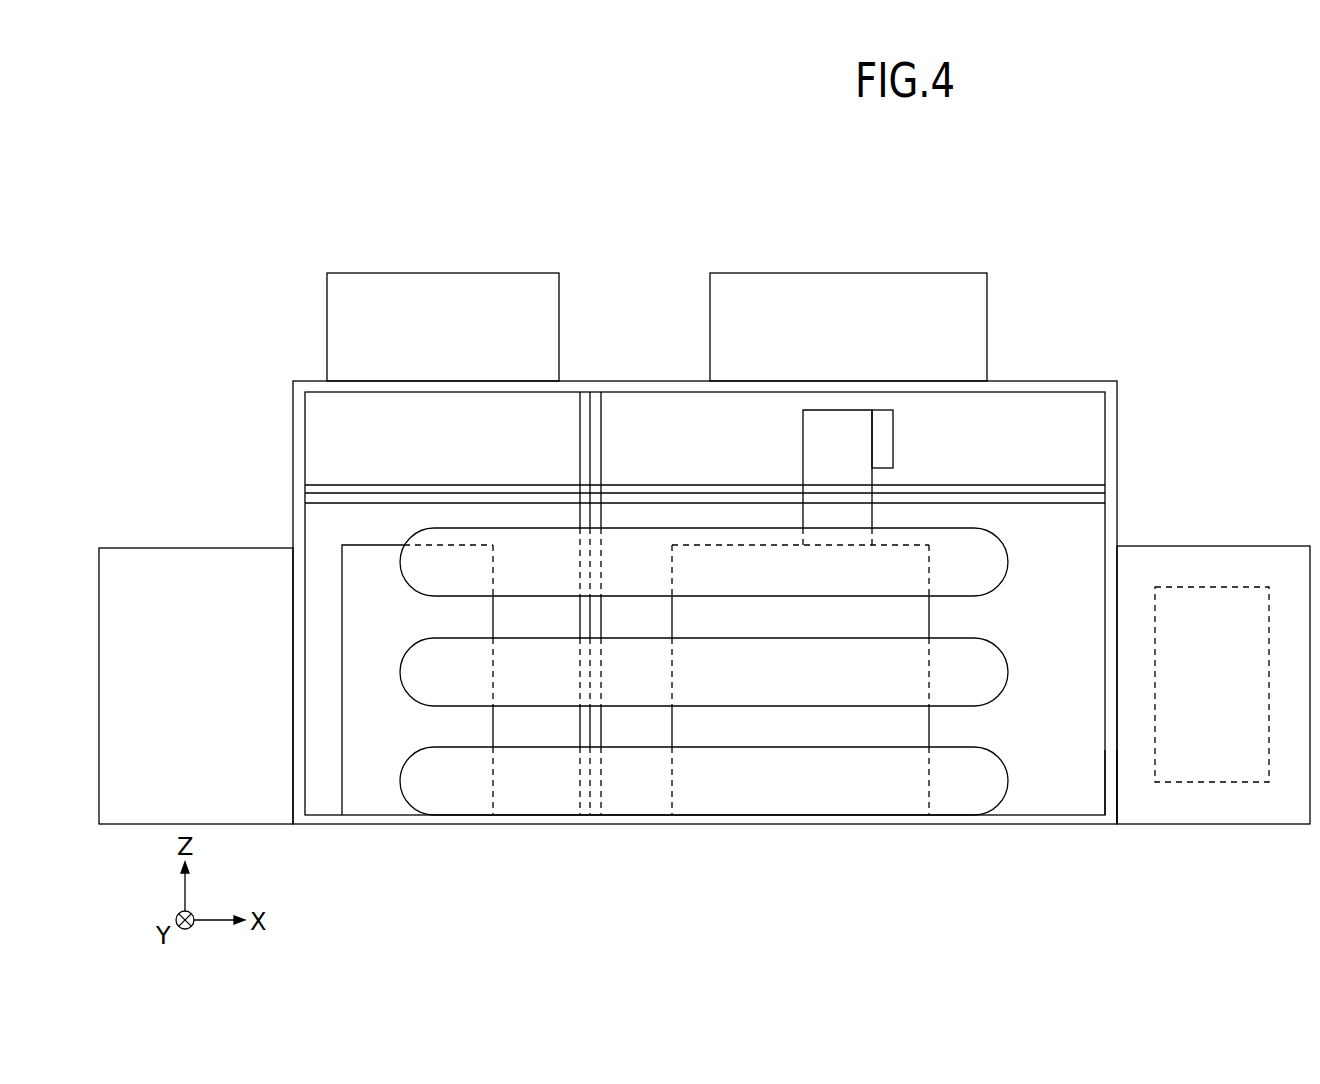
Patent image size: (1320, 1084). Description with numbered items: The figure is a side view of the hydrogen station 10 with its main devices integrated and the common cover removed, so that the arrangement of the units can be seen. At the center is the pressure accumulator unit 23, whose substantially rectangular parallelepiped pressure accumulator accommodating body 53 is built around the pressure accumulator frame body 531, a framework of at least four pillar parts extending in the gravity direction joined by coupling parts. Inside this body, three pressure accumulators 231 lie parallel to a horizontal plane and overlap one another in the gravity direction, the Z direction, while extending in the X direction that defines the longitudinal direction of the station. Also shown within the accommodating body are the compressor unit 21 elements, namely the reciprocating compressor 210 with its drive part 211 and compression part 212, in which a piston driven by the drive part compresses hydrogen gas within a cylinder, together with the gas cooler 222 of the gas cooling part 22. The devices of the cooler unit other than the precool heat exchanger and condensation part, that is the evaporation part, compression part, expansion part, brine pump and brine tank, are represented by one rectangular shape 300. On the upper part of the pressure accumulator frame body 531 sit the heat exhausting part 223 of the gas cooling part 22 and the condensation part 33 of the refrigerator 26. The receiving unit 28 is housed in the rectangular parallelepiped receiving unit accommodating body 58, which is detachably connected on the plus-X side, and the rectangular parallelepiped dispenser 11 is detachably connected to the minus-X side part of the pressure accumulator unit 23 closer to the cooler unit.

The hydrogen station 10 is at (312, 175).
The dispenser 11 is at (152, 547).
The compressor unit 21 is at (718, 152).
The compressor 210 is at (787, 220).
The drive part 211 is at (699, 545).
The compression part 212 is at (803, 432).
The gas cooling part 22 is at (1095, 218).
The gas cooler 222 is at (893, 420).
The heat exhausting part 223 is at (957, 273).
The pressure accumulator unit 23 is at (1120, 529).
The pressure accumulator 231 is at (997, 533).
The refrigerator 26 is at (293, 315).
The receiving unit 28 is at (1238, 587).
The device indicated by reference sign 300 is at (362, 546).
The condensation part 33 is at (377, 272).
The pressure accumulator accommodating body 53 is at (1021, 834).
The pressure accumulator frame body 531 is at (1115, 780).
The receiving unit accommodating body 58 is at (1204, 546).